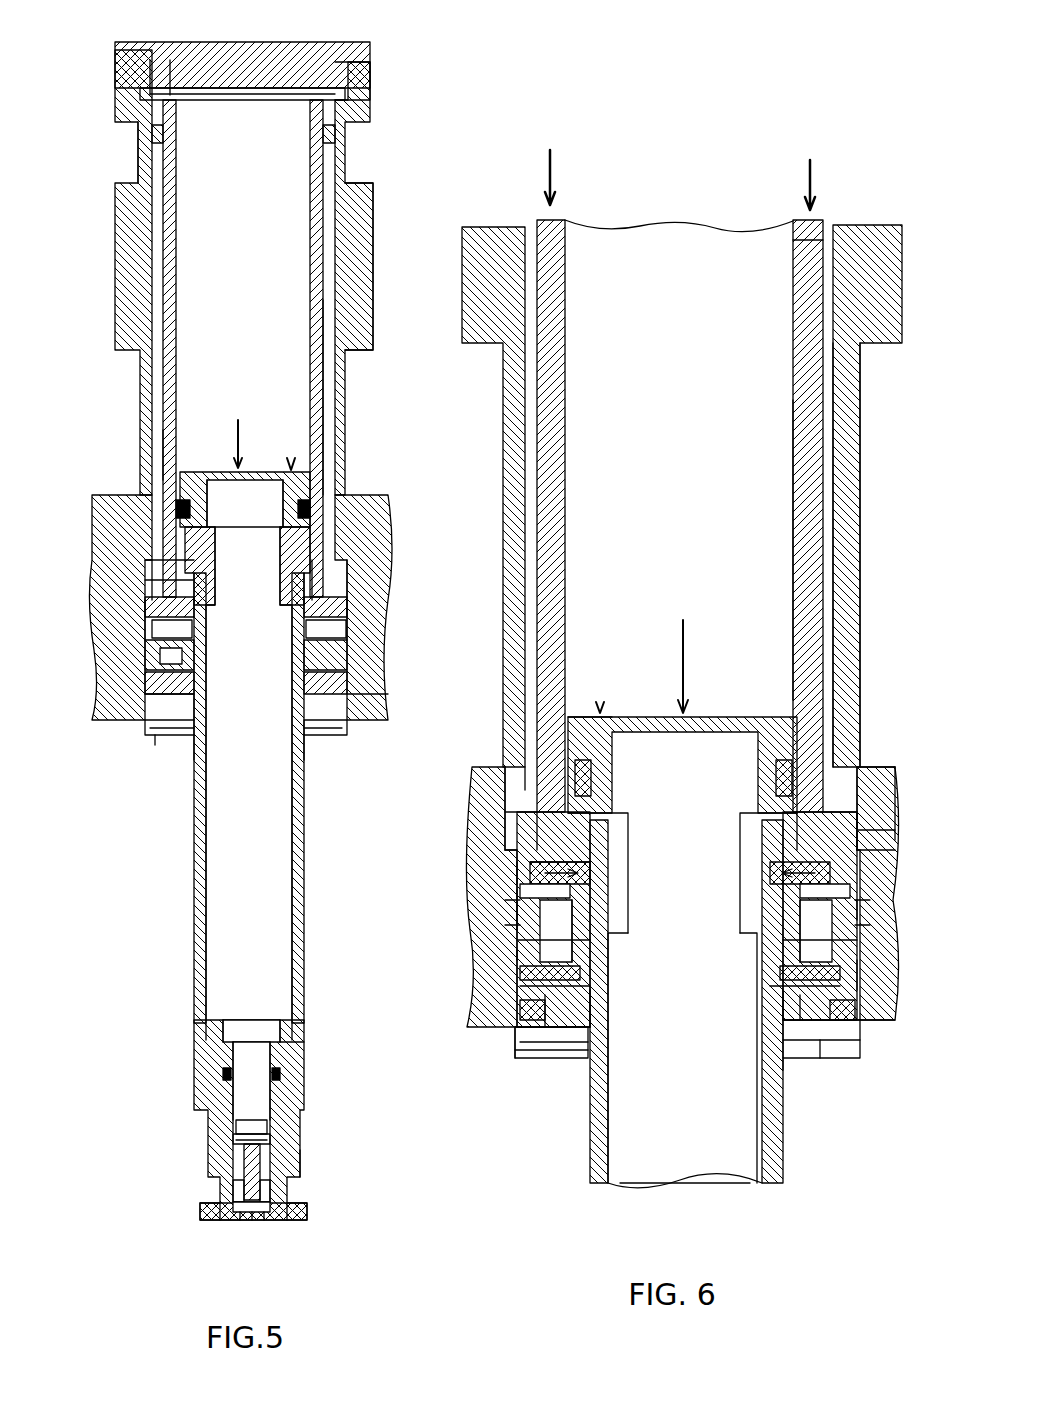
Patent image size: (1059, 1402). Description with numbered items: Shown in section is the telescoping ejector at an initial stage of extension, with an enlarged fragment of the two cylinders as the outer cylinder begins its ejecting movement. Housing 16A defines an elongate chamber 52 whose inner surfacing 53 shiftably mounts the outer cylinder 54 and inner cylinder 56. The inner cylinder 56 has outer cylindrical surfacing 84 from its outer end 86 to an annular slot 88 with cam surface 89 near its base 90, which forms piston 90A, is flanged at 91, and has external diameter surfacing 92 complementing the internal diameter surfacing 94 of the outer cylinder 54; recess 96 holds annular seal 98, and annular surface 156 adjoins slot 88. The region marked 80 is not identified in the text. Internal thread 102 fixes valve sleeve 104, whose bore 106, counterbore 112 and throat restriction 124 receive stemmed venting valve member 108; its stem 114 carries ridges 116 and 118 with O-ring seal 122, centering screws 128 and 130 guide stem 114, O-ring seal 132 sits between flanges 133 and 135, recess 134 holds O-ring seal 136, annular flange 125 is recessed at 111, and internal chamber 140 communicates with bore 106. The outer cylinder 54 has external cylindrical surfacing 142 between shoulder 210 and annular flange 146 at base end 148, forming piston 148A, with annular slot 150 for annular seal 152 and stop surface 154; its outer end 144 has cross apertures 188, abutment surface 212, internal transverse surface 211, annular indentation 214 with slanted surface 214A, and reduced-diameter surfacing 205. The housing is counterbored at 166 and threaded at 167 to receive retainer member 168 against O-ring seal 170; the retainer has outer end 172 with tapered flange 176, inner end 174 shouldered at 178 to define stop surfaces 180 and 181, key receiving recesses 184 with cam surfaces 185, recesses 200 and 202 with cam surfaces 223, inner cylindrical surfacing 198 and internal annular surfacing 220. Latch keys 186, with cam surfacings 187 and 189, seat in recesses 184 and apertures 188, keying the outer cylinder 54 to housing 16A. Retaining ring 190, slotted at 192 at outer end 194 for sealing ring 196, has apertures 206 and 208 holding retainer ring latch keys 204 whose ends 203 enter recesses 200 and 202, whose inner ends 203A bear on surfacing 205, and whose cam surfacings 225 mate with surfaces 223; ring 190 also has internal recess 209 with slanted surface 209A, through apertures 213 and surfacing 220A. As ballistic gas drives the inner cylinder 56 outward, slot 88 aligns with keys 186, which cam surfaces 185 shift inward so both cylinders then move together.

In FIG. 6, the housing 16A is at (852, 394).
In FIG. 5, the elongate chamber 52 is at (345, 217).
In FIG. 6, the elongate chamber 52 is at (796, 242).
In FIG. 5, the inner surfacing 53 is at (150, 280).
In FIG. 6, the inner surfacing 53 is at (838, 460).
In FIG. 5, the outer cylinder 54 is at (336, 477).
In FIG. 6, the outer cylinder 54 is at (806, 354).
In FIG. 5, the inner cylinder 56 is at (195, 917).
In FIG. 6, the inner cylinder 56 is at (784, 1132).
In FIG. 5, the piston 80 is at (245, 499).
In FIG. 5, the outer cylindrical surfacing 84 is at (305, 922).
In FIG. 6, the outer cylindrical surfacing 84 is at (786, 1172).
In FIG. 5, the outer end 86 is at (306, 1174).
In FIG. 6, the annular slot 88 is at (602, 862).
In FIG. 5, the annular cam surface 89 is at (155, 557).
In FIG. 6, the annular cam surface 89 is at (596, 894).
In FIG. 5, the base end 90 is at (245, 478).
In FIG. 5, the piston 90A is at (292, 466).
In FIG. 6, the piston 90A is at (600, 712).
In FIG. 5, the lateral flange 91 is at (322, 472).
In FIG. 5, the external diameter surfacing 92 is at (166, 440).
In FIG. 5, the internal diameter surfacing 94 is at (320, 177).
In FIG. 6, the internal diameter surfacing 94 is at (800, 499).
In FIG. 5, the recess 96 is at (218, 470).
In FIG. 5, the annular seal 98 is at (166, 494).
In FIG. 6, the annular seal 98 is at (588, 717).
In FIG. 5, the internal thread 102 is at (288, 1159).
In FIG. 5, the valve sleeve 104 is at (282, 1084).
In FIG. 5, the bore 106 is at (216, 1080).
In FIG. 5, the stemmed venting valve member 108 is at (262, 1214).
In FIG. 5, the recess 111 is at (212, 1218).
In FIG. 5, the counterbore 112 is at (250, 1214).
In FIG. 5, the stem 114 is at (250, 1154).
In FIG. 5, the ridge 116 is at (236, 1092).
In FIG. 5, the ridge 118 is at (226, 1144).
In FIG. 5, the O-ring seal 122 is at (240, 1134).
In FIG. 5, the throat restriction 124 is at (272, 1144).
In FIG. 5, the annular flange 125 is at (302, 1222).
In FIG. 5, the centering screw 128 is at (236, 1188).
In FIG. 5, the centering screw 130 is at (277, 1194).
In FIG. 5, the O-ring seal 132 is at (242, 1214).
In FIG. 5, the flange 133 is at (280, 1214).
In FIG. 5, the recess 134 is at (252, 1042).
In FIG. 5, the flange 135 is at (218, 1214).
In FIG. 5, the O-ring seal 136 is at (300, 1062).
In FIG. 6, the internal chamber 140 is at (705, 1172).
In FIG. 5, the external cylindrical surfacing 142 is at (350, 290).
In FIG. 6, the external cylindrical surfacing 142 is at (840, 539).
In FIG. 5, the outer end 144 is at (312, 744).
In FIG. 6, the outer end 144 is at (565, 1062).
In FIG. 5, the annular flange 146 is at (348, 98).
In FIG. 5, the base end 148 is at (330, 92).
In FIG. 5, the piston 148A is at (160, 92).
In FIG. 5, the annular slot 150 is at (282, 86).
In FIG. 5, the annular seal 152 is at (338, 139).
In FIG. 6, the annular seal 152 is at (540, 772).
In FIG. 5, the annular stop surface 154 is at (150, 170).
In FIG. 6, the annular surface 156 is at (590, 722).
In FIG. 6, the counterbore 166 is at (880, 824).
In FIG. 6, the internal thread 167 is at (512, 952).
In FIG. 5, the retainer member 168 is at (150, 702).
In FIG. 6, the retainer member 168 is at (860, 852).
In FIG. 5, the O-ring seal 170 is at (97, 547).
In FIG. 6, the O-ring seal 170 is at (872, 824).
In FIG. 5, the outer end 172 is at (320, 738).
In FIG. 6, the outer end 172 is at (847, 1060).
In FIG. 5, the inner end 174 is at (380, 554).
In FIG. 6, the inner end 174 is at (858, 832).
In FIG. 6, the tapered flange 176 is at (546, 1062).
In FIG. 5, the internal shoulder 178 is at (150, 619).
In FIG. 6, the internal shoulder 178 is at (522, 864).
In FIG. 5, the stop surface 180 is at (368, 554).
In FIG. 6, the stop surface 180 is at (803, 830).
In FIG. 6, the stop surface 181 is at (792, 934).
In FIG. 5, the key receiving recess 184 is at (112, 602).
In FIG. 6, the key receiving recess 184 is at (502, 852).
In FIG. 6, the slanted cam surface 185 is at (502, 847).
In FIG. 5, the outer cylinder latch key 186 is at (150, 644).
In FIG. 6, the outer cylinder latch key 186 is at (683, 766).
In FIG. 6, the cam surfacing 187 is at (505, 824).
In FIG. 5, the cross aperture 188 is at (285, 614).
In FIG. 6, the cross aperture 188 is at (592, 882).
In FIG. 6, the cam surfacing 189 is at (790, 864).
In FIG. 5, the retaining ring 190 is at (165, 744).
In FIG. 6, the retaining ring 190 is at (886, 854).
In FIG. 6, the annular slot 192 is at (770, 1074).
In FIG. 6, the outer end 194 is at (834, 1058).
In FIG. 5, the annular sealing ring 196 is at (386, 702).
In FIG. 6, the annular sealing ring 196 is at (886, 1024).
In FIG. 6, the inner cylindrical surfacing 198 is at (512, 977).
In FIG. 6, the recess 200 is at (512, 1002).
In FIG. 6, the recess 202 is at (857, 974).
In FIG. 6, the key end 203 is at (515, 992).
In FIG. 6, the inner end 203A is at (606, 1002).
In FIG. 5, the retainer ring latch key 204 is at (157, 718).
In FIG. 6, the retainer ring latch key 204 is at (540, 1042).
In FIG. 6, the reduced diameter external surfacing 205 is at (602, 989).
In FIG. 5, the cross aperture 206 is at (160, 764).
In FIG. 6, the cross aperture 206 is at (545, 1052).
In FIG. 6, the cross aperture 208 is at (792, 1004).
In FIG. 6, the internal annular recess 209 is at (502, 932).
In FIG. 6, the annular slanted surface 209A is at (866, 909).
In FIG. 5, the shoulder 210 is at (187, 654).
In FIG. 6, the shoulder 210 is at (540, 879).
In FIG. 6, the internal annular transverse surface 211 is at (520, 802).
In FIG. 5, the annular abutment surface 212 is at (347, 622).
In FIG. 6, the annular abutment surface 212 is at (522, 907).
In FIG. 5, the through aperture 213 is at (150, 668).
In FIG. 6, the through aperture 213 is at (502, 964).
In FIG. 6, the annular indentation 214 is at (566, 939).
In FIG. 6, the annular slanted surface 214A is at (566, 978).
In FIG. 6, the internal annular surfacing 220 is at (782, 894).
In FIG. 6, the internal annular surfacing 220A is at (792, 909).
In FIG. 6, the slanted cam surface 223 is at (562, 992).
In FIG. 6, the cam surfacing 225 is at (522, 1012).